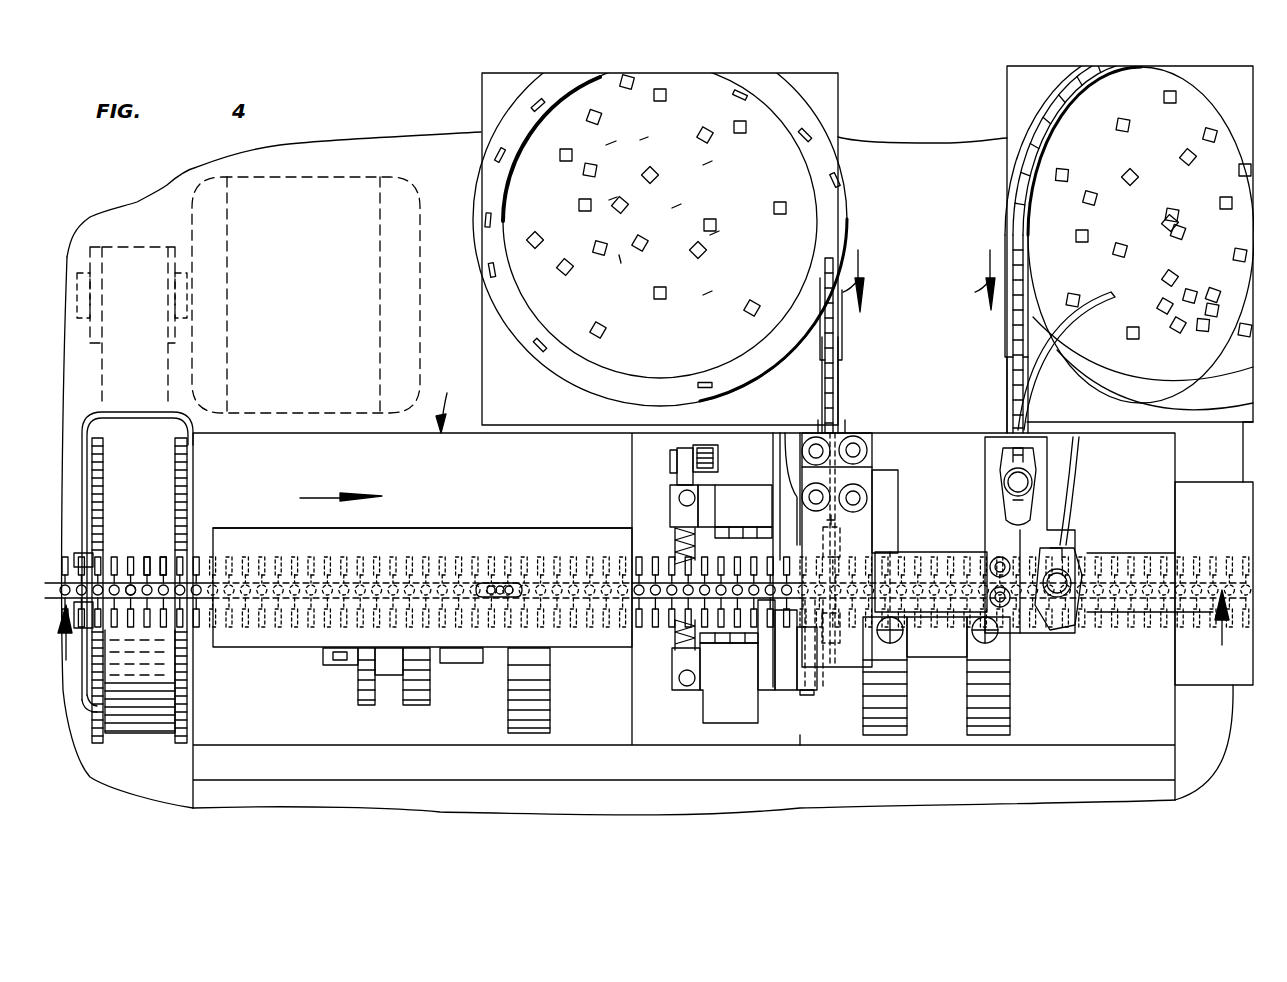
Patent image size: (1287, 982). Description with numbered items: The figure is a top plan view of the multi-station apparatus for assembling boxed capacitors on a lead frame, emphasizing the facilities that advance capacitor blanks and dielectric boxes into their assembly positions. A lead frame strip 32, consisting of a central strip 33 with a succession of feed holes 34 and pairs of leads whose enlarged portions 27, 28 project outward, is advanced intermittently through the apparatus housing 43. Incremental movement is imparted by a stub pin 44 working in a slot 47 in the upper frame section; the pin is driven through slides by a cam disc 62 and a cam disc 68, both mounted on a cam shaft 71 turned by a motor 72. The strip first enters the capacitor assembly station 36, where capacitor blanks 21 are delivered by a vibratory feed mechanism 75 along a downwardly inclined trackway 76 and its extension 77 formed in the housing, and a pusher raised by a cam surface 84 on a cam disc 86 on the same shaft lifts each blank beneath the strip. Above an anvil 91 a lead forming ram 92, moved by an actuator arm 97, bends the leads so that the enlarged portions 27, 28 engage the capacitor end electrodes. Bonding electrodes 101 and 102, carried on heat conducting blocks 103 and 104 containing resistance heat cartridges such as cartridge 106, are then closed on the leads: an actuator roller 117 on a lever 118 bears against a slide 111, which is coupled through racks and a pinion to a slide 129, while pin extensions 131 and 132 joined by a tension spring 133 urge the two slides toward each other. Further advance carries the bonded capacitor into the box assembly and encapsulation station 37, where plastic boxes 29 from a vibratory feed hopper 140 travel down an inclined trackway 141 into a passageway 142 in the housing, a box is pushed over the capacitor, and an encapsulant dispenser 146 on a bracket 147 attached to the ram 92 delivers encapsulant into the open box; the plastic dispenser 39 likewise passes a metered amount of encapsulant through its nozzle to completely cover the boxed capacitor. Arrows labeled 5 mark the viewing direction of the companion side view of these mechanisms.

The section line indicator 5 is at (643, 637).
The capacitor blank 21 is at (748, 306).
The enlarged portion of lead 27 is at (140, 612).
The enlarged portion of lead 28 is at (165, 558).
The plastic box 29 is at (1013, 220).
The lead frame strip 32 is at (270, 560).
The central strip 33 is at (128, 583).
The feed holes 34 is at (428, 560).
The capacitor assembly station 36 is at (789, 584).
The box assembly station 37 is at (1032, 567).
The plastic dispenser 39 is at (1064, 566).
The apparatus housing 43 is at (449, 400).
The stub pin 44 is at (486, 582).
The slot 47 is at (505, 582).
The cam disc 62 is at (508, 715).
The cam disc 68 is at (385, 685).
The cam shaft 71 is at (92, 553).
The motor 72 is at (345, 177).
The vibratory feed mechanism 75 is at (838, 118).
The inclined trackway 76 is at (840, 392).
The trackway extension 77 is at (842, 430).
The cam surface 84 is at (972, 718).
The cam disc 86 is at (872, 735).
The anvil 91 is at (775, 548).
The lead forming ram 92 is at (867, 450).
The actuator arm 97 is at (870, 675).
The bonding electrode 101 is at (828, 645).
The bonding electrode 102 is at (840, 530).
The heat conducting block 103 is at (790, 670).
The heat conducting block 104 is at (782, 470).
The resistance heat cartridge 106 is at (808, 695).
The slide 111 is at (747, 440).
The actuator roller 117 is at (693, 452).
The lever 118 is at (677, 472).
The slide 129 is at (720, 703).
The pin extension 131 is at (679, 498).
The pin extension 132 is at (679, 676).
The tension spring 133 is at (678, 540).
The vibratory feed hopper 140 is at (1040, 100).
The inclined trackway 141 is at (1013, 381).
The passageway 142 is at (1018, 550).
The encapsulant dispenser 146 is at (1010, 475).
The bracket 147 is at (940, 552).